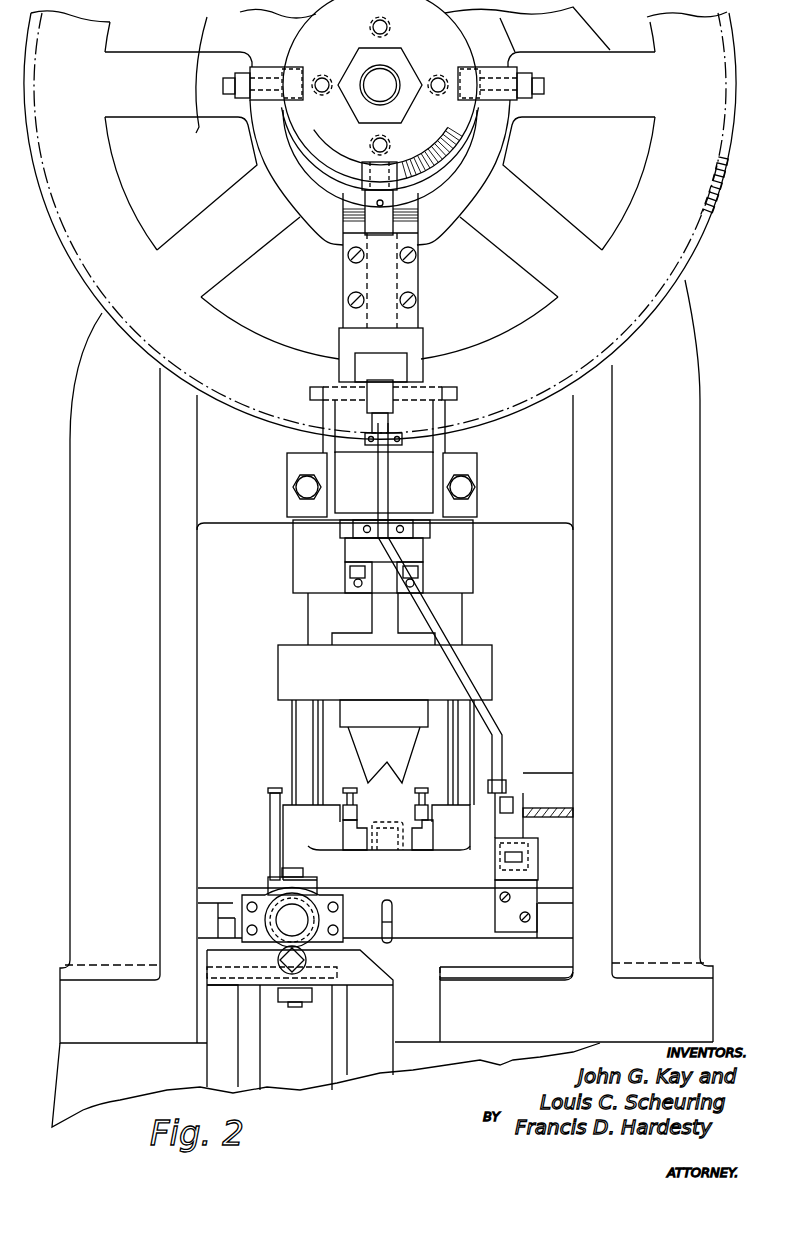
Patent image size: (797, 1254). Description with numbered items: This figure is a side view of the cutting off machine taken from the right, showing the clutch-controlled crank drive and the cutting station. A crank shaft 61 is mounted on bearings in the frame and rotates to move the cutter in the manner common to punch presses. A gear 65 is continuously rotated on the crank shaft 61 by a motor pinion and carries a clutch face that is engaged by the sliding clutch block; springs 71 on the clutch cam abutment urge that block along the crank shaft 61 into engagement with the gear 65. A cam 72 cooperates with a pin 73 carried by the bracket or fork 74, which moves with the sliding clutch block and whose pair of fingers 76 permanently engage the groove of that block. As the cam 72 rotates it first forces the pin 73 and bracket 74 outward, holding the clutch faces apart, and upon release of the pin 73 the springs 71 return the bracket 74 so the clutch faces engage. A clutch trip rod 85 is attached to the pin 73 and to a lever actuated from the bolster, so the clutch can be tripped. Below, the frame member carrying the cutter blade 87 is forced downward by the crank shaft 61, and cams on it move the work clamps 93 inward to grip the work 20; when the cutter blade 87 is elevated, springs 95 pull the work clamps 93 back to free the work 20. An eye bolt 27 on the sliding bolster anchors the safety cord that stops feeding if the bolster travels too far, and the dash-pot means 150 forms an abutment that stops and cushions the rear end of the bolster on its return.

The work 20 is at (380, 823).
The eye bolt 27 is at (393, 922).
The crank shaft 61 is at (382, 84).
The gear 65 is at (700, 88).
The springs 71 is at (384, 29).
The cam 72 is at (317, 140).
The pin 73 is at (370, 178).
The bracket or fork 74 is at (437, 220).
The fingers 76 is at (288, 72).
The clutch trip rod 85 is at (473, 645).
The cutter blade 87 is at (402, 753).
The work clamps 93 is at (350, 840).
The springs 95 is at (327, 802).
The abutment means (dash pot) 150 is at (320, 920).